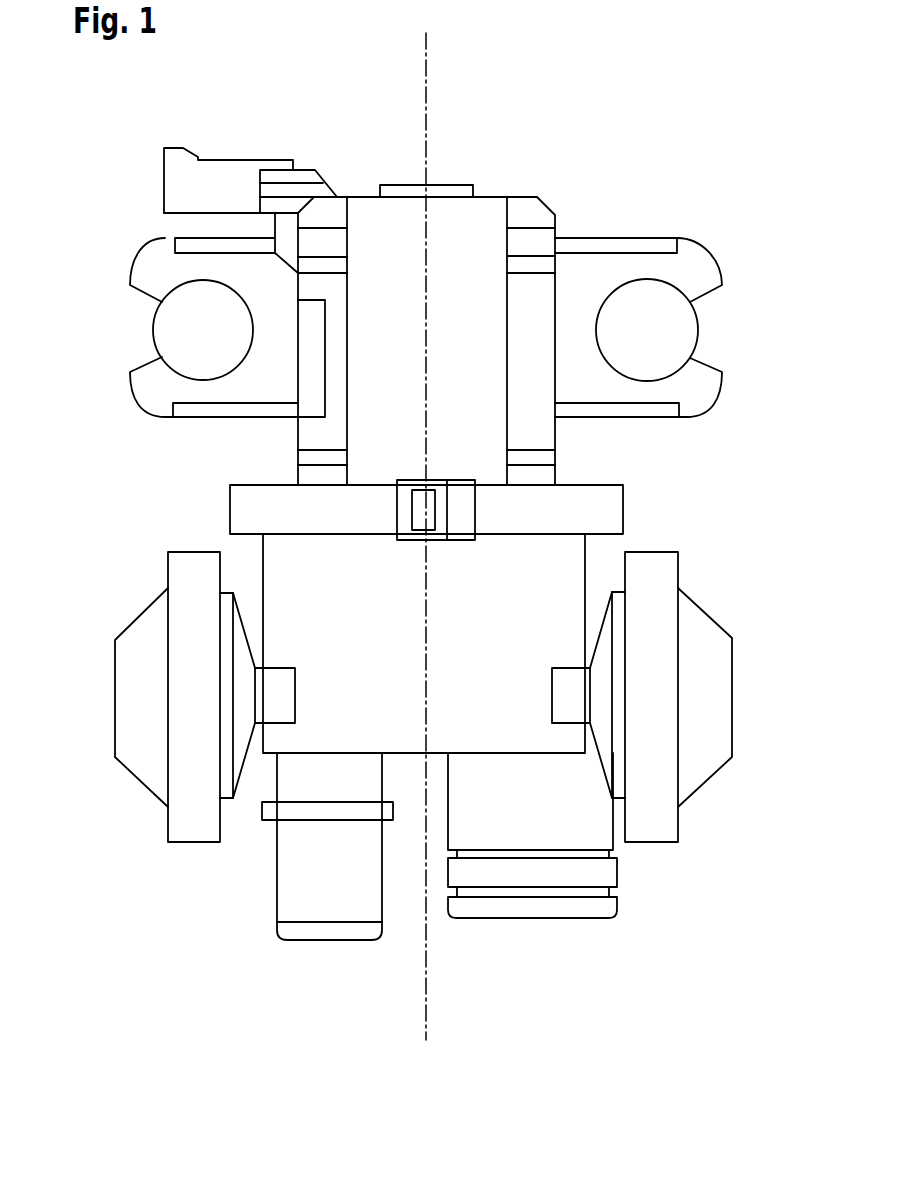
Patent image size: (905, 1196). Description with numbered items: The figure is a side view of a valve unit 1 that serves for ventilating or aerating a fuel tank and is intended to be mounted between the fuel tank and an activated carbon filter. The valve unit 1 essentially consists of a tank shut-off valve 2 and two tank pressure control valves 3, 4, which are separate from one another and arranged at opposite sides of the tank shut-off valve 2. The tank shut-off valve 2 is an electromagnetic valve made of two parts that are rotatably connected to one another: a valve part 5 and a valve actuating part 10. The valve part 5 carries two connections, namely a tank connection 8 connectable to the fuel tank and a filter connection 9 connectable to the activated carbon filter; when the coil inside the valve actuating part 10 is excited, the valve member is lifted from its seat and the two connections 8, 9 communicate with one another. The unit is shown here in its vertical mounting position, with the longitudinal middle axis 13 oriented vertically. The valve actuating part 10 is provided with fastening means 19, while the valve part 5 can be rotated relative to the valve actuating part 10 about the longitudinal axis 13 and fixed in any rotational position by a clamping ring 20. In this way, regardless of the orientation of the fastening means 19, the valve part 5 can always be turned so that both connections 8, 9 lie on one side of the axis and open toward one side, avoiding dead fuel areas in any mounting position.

The valve unit 1 is at (667, 118).
The tank shut-off valve 2 is at (505, 182).
The tank pressure control valve 3 is at (197, 565).
The tank pressure control valve 4 is at (712, 640).
The valve part 5 is at (381, 690).
The tank connection 8 is at (350, 897).
The filter connection 9 is at (512, 875).
The valve actuating part 10 is at (470, 323).
The longitudinal middle axis 13 is at (427, 95).
The fastening means 19 is at (152, 270).
The clamping ring 20 is at (600, 506).